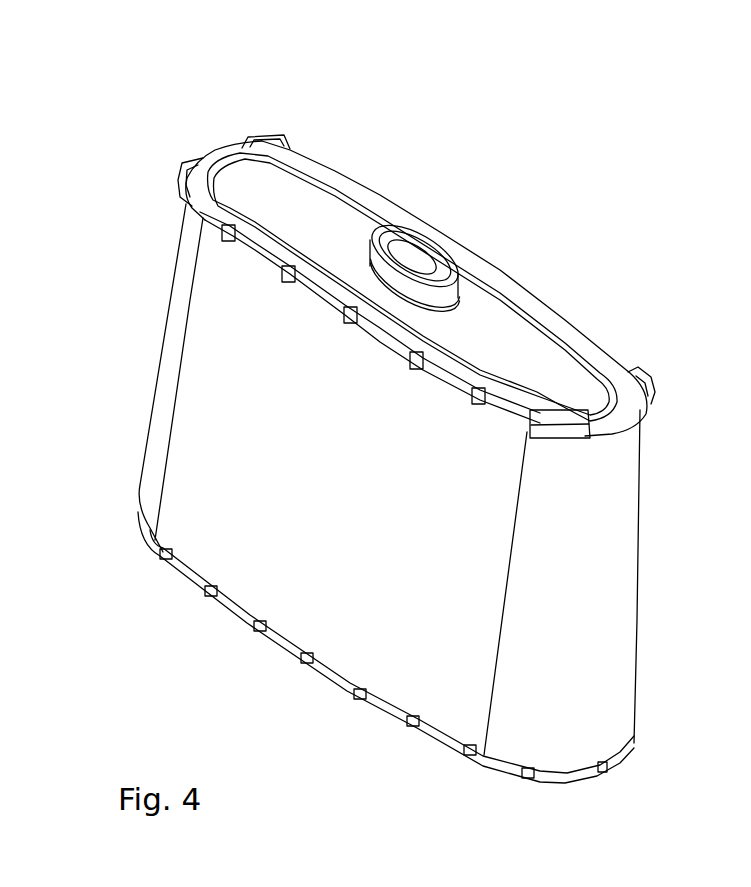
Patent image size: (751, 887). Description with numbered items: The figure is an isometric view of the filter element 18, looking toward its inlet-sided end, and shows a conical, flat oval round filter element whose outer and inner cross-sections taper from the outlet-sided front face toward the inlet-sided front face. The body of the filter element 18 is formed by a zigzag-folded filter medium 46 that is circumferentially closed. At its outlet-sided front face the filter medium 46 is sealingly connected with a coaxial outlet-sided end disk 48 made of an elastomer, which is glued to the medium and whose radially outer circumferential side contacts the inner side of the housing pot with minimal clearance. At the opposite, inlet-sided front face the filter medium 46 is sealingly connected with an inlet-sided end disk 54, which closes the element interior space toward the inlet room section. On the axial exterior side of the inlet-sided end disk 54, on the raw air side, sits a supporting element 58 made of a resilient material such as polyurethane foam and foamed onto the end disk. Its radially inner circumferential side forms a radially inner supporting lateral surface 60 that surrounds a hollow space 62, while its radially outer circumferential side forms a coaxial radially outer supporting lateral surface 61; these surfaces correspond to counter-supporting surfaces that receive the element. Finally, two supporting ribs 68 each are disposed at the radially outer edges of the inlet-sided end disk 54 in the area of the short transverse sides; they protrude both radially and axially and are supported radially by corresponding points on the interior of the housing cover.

The filter element 18 is at (101, 109).
The filter medium 46 is at (172, 360).
The outlet-sided end disk 48 is at (627, 752).
The inlet-sided end disk 54 is at (349, 215).
The supporting element 58 is at (455, 288).
The radially inner supporting lateral surface 60 is at (433, 265).
The radially outer supporting lateral surface 61 is at (372, 260).
The hollow space 62 is at (413, 267).
The supporting ribs 68 is at (263, 133).